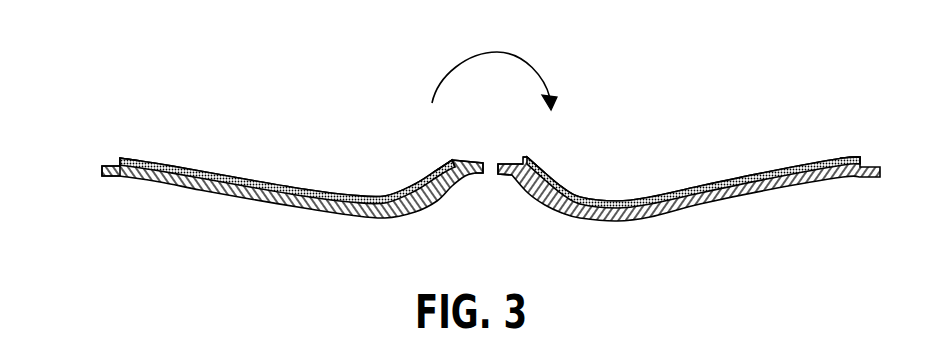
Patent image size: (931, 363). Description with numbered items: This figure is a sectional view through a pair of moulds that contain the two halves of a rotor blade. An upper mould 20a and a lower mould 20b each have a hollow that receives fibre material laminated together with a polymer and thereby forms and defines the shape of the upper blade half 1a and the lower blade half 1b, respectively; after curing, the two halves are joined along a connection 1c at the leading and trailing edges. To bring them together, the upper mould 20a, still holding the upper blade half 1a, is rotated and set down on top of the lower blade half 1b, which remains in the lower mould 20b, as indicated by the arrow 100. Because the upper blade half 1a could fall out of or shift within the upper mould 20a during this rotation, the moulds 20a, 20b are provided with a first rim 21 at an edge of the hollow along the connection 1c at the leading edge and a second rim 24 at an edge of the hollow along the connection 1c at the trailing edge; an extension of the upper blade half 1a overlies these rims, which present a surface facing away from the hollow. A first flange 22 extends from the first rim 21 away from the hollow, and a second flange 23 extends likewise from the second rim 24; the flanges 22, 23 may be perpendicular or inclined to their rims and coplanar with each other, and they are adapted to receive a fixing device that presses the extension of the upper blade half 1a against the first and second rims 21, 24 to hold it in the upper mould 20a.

The upper blade half 1a is at (228, 178).
The lower blade half 1b is at (680, 185).
The connection 1c is at (136, 158).
The upper mould 20a is at (237, 192).
The lower mould 20b is at (725, 198).
The first rim 21 is at (462, 165).
The first flange 22 is at (476, 164).
The second flange 23 is at (108, 165).
The second rim 24 is at (117, 162).
The arrow 100 is at (498, 68).